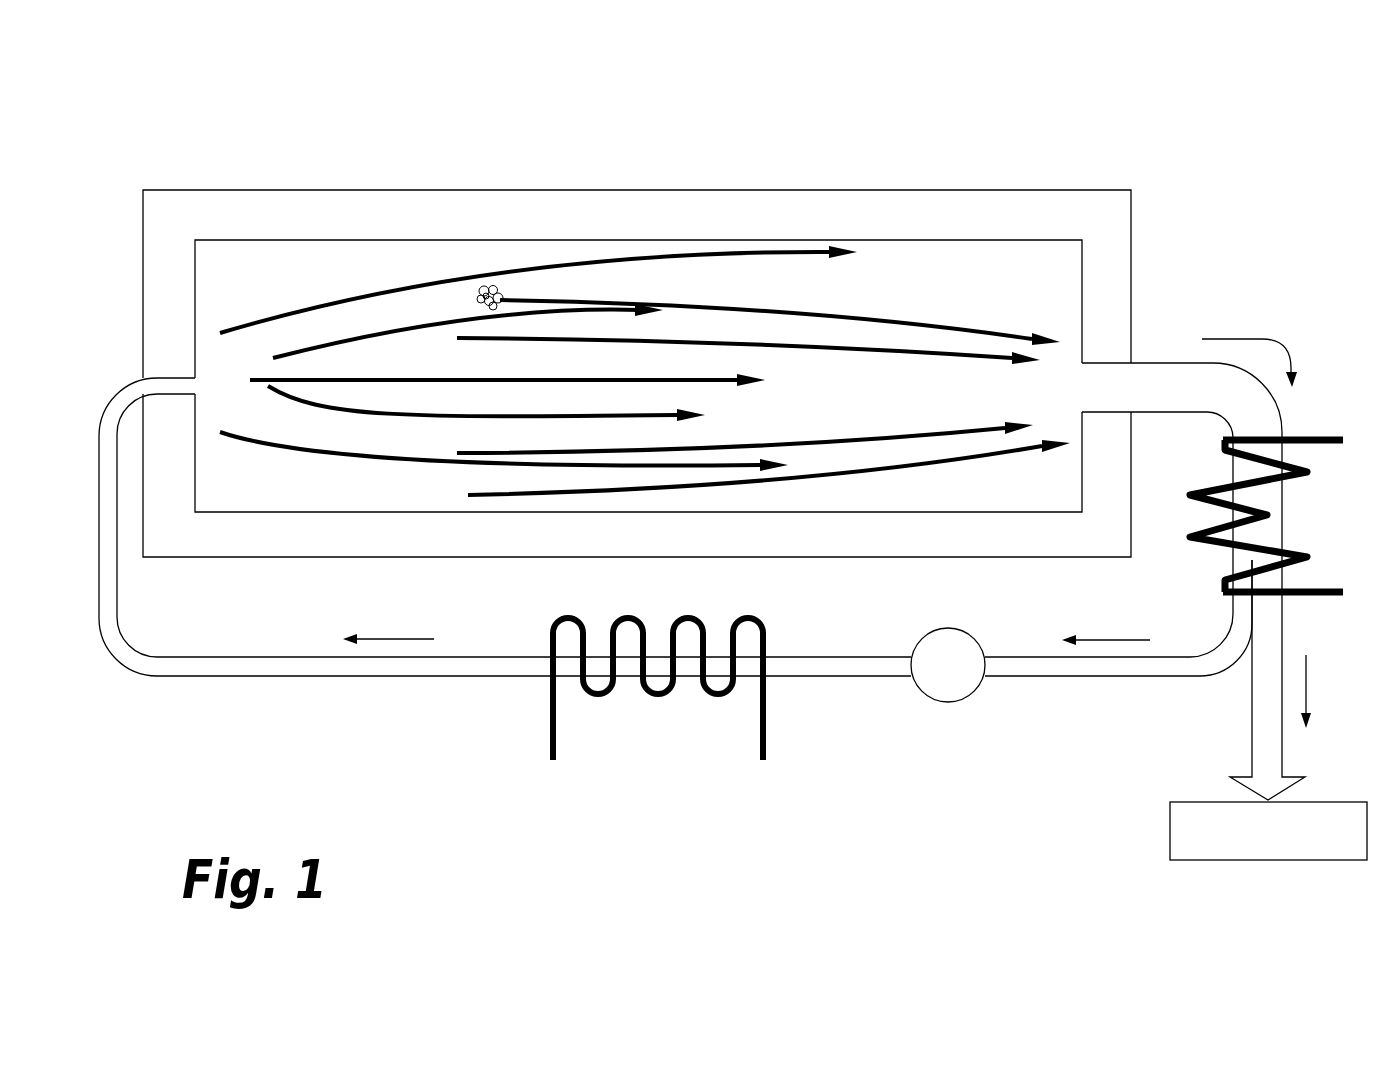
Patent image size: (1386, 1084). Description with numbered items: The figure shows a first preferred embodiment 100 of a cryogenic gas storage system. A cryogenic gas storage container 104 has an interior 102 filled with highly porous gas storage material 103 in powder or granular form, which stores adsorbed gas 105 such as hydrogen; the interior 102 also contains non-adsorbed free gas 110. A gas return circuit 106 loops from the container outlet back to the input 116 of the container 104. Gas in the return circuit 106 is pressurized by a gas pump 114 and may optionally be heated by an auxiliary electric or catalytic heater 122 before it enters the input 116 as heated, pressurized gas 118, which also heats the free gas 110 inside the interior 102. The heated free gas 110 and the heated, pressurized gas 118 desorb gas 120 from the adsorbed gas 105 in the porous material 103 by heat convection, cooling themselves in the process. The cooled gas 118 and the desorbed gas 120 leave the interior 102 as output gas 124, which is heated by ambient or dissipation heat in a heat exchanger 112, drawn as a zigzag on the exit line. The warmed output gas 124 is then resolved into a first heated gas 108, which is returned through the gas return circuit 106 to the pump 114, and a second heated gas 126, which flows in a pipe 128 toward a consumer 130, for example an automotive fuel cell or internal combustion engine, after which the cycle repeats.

The first preferred embodiment 100 is at (452, 162).
The interior 102 is at (218, 293).
The highly porous gas storage material 103 is at (480, 288).
The cryogenic gas storage container 104 is at (290, 190).
The adsorbed gas 105 is at (474, 293).
The gas return circuit 106 is at (303, 685).
The first heated gas 108 is at (1113, 640).
The free gas 110 is at (440, 282).
The heat exchanger 112 is at (1306, 437).
The gas pump 114 is at (934, 700).
The input 116 is at (194, 377).
The heated, pressurized gas 118 is at (374, 639).
The desorbed gas 120 is at (953, 350).
The heater 122 is at (553, 742).
The output gas 124 is at (1261, 338).
The second heated gas 126 is at (1306, 698).
The pipe 128 is at (1250, 753).
The consumer 130 is at (1170, 827).